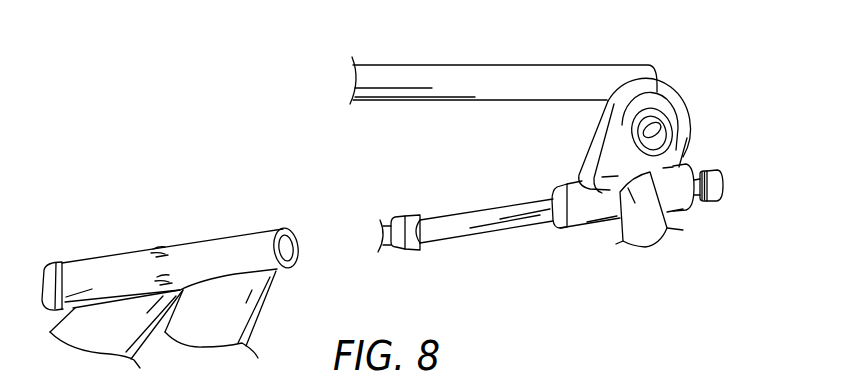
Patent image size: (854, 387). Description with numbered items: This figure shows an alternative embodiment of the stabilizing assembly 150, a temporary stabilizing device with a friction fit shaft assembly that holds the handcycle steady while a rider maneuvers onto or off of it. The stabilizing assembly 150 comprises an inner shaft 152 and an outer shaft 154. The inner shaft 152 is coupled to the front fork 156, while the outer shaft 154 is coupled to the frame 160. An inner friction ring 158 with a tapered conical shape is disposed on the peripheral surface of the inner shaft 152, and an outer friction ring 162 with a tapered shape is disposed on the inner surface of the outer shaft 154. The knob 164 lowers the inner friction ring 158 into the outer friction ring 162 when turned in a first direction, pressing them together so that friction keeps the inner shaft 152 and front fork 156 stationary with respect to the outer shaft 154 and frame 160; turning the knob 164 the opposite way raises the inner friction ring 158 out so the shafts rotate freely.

The stabilizing assembly 150 is at (268, 126).
The inner shaft 152 is at (488, 214).
The outer shaft 154 is at (115, 262).
The front fork 156 is at (390, 76).
The inner friction ring 158 is at (403, 248).
The frame 160 is at (97, 340).
The outer friction ring 162 is at (163, 245).
The knob 164 is at (723, 184).